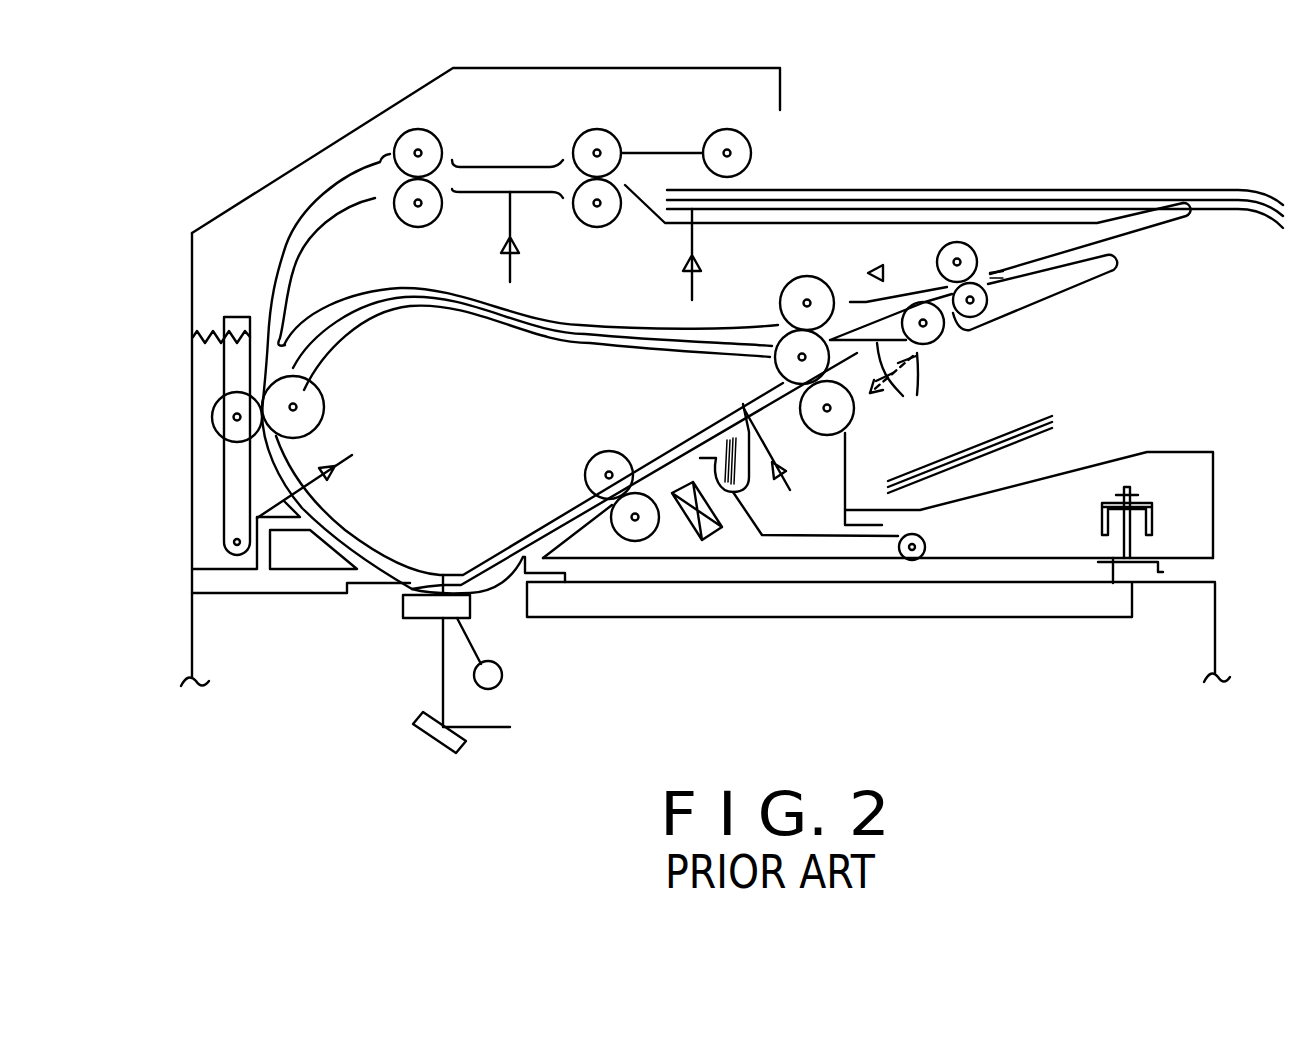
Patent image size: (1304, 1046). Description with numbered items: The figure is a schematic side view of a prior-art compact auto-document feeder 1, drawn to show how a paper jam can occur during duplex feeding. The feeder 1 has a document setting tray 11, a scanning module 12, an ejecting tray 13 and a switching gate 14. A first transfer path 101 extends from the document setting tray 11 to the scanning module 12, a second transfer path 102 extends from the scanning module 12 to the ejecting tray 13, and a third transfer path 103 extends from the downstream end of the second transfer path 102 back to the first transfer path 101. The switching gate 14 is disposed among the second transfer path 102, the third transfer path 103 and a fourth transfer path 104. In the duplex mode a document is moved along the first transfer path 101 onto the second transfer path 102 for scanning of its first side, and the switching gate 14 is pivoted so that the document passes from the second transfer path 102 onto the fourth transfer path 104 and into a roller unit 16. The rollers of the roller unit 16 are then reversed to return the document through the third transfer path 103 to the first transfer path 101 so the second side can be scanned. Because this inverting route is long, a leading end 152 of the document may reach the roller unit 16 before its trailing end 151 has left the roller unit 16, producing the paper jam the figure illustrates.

The compact auto-document feeder 1 is at (1041, 142).
The first transfer path 101 is at (272, 266).
The second transfer path 102 is at (562, 527).
The third transfer path 103 is at (554, 327).
The fourth transfer path 104 is at (1028, 270).
The document setting tray 11 is at (1068, 235).
The scanning module 12 is at (421, 612).
The ejecting tray 13 is at (1100, 477).
The switching gate 14 is at (895, 387).
The trailing end 151 is at (998, 278).
The leading end 152 is at (846, 358).
The roller unit 16 is at (955, 250).